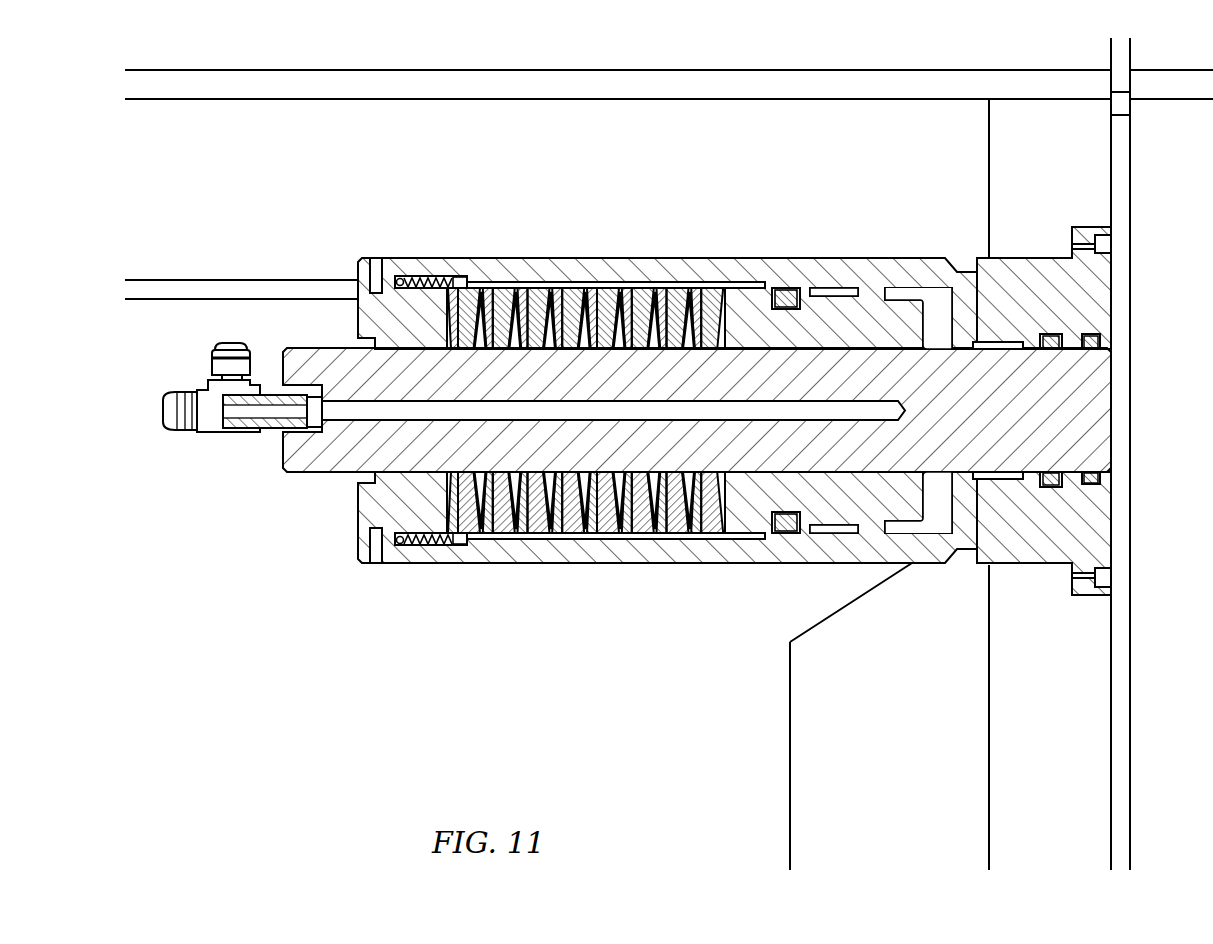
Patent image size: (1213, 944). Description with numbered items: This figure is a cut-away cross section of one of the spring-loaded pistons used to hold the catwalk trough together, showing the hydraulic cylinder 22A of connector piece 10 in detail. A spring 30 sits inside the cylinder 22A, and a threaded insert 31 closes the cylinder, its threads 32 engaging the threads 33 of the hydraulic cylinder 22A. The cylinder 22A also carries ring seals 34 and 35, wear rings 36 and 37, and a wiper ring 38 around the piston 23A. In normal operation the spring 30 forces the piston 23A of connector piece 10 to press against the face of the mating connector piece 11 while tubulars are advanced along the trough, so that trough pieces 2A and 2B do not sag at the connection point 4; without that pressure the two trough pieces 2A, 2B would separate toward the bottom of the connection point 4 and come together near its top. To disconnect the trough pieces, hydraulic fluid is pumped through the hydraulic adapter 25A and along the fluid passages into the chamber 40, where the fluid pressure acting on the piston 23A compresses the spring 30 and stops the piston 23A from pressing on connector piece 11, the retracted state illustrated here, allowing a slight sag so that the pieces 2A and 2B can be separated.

The trough piece 2A is at (562, 59).
The trough piece 2B is at (1168, 59).
The connection point 4 is at (1120, 382).
The connector piece 10 is at (1039, 158).
The connector piece 11 is at (1170, 277).
The hydraulic cylinder 22A is at (562, 563).
The piston 23A is at (1075, 412).
The hydraulic adapter 25A is at (208, 383).
The spring 30 is at (592, 292).
The threaded insert 31 is at (620, 440).
The threads 32 is at (455, 282).
The threads 33 is at (416, 279).
The ring seal 34 is at (778, 289).
The ring seal 35 is at (1052, 338).
The wear ring 36 is at (846, 289).
The wear ring 37 is at (1003, 340).
The wiper ring 38 is at (1093, 336).
The chamber 40 is at (935, 312).